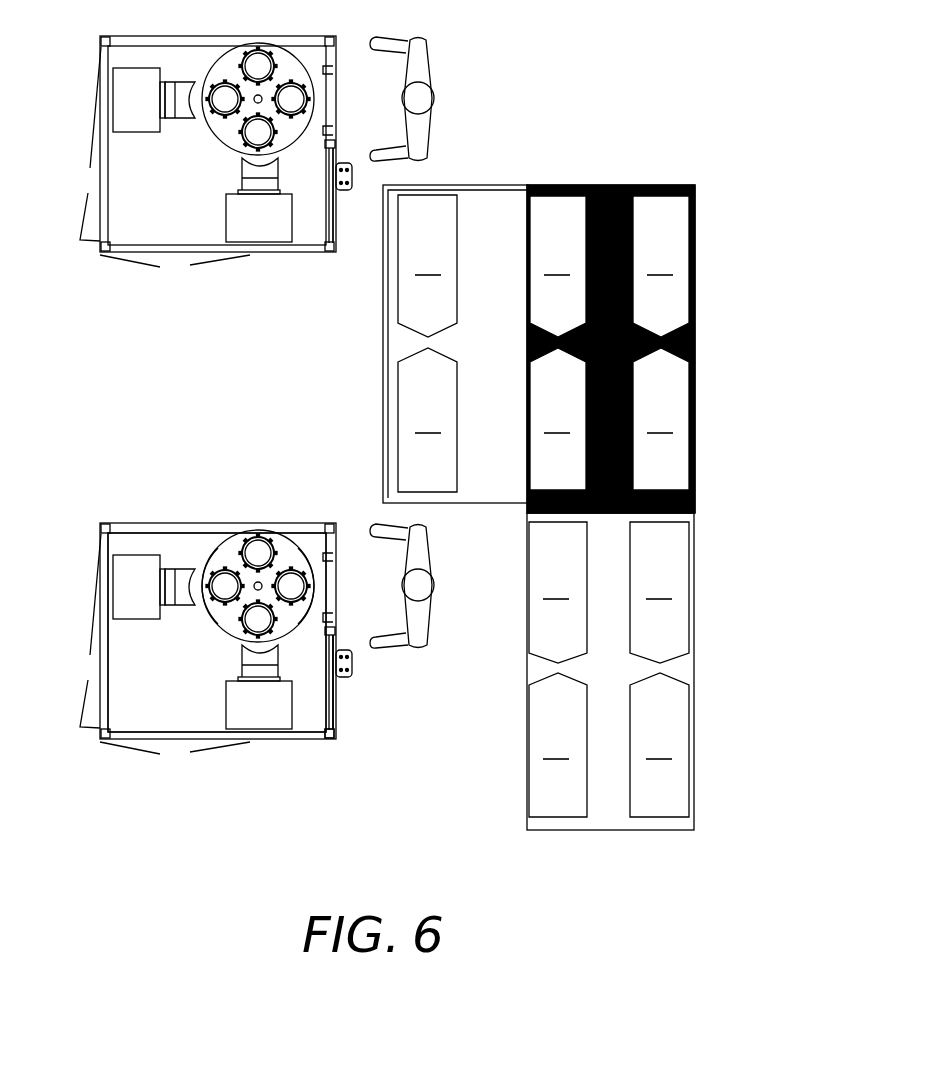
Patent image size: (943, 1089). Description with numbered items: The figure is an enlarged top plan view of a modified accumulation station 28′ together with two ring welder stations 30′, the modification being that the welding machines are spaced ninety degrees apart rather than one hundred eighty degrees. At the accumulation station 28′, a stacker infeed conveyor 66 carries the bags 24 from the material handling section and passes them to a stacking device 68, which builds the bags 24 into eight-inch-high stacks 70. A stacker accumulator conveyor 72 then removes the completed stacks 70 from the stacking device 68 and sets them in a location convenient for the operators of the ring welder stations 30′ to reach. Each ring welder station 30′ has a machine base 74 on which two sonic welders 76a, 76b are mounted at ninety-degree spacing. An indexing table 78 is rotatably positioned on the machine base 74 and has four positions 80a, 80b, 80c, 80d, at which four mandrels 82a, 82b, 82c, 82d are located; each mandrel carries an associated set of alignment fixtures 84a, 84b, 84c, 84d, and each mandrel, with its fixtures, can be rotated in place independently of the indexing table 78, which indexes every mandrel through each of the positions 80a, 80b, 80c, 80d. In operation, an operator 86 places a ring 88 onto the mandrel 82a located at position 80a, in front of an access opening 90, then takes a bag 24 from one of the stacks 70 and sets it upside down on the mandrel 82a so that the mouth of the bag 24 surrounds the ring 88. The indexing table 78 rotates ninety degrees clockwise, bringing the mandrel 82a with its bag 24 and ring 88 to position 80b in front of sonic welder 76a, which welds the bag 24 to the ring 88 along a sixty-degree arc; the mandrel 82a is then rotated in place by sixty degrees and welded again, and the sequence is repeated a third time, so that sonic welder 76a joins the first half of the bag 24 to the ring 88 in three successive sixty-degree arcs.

The bag 24 is at (609, 669).
The accumulation station 28′ is at (723, 240).
The ring welder station 30′ is at (100, 193).
The stacker infeed conveyor 66 is at (696, 586).
The stacking device 68 is at (698, 332).
The stack 70 is at (543, 343).
The stacker accumulator conveyor 72 is at (487, 200).
The machine base 74 is at (130, 720).
The sonic welder 76a is at (243, 227).
The sonic welder 76b is at (138, 100).
The indexing table 78 is at (337, 723).
The position 80a is at (305, 600).
The position 80b is at (246, 628).
The position 80c is at (215, 595).
The position 80d is at (250, 540).
The mandrel 82a is at (292, 592).
The mandrel 82b is at (253, 622).
The mandrel 82c is at (220, 585).
The mandrel 82d is at (262, 550).
The alignment fixture 84a is at (290, 540).
The alignment fixture 84b is at (292, 633).
The alignment fixture 84c is at (206, 572).
The alignment fixture 84d is at (207, 535).
The operator 86 is at (418, 553).
The ring 88 is at (227, 105).
The access opening 90 is at (418, 60).